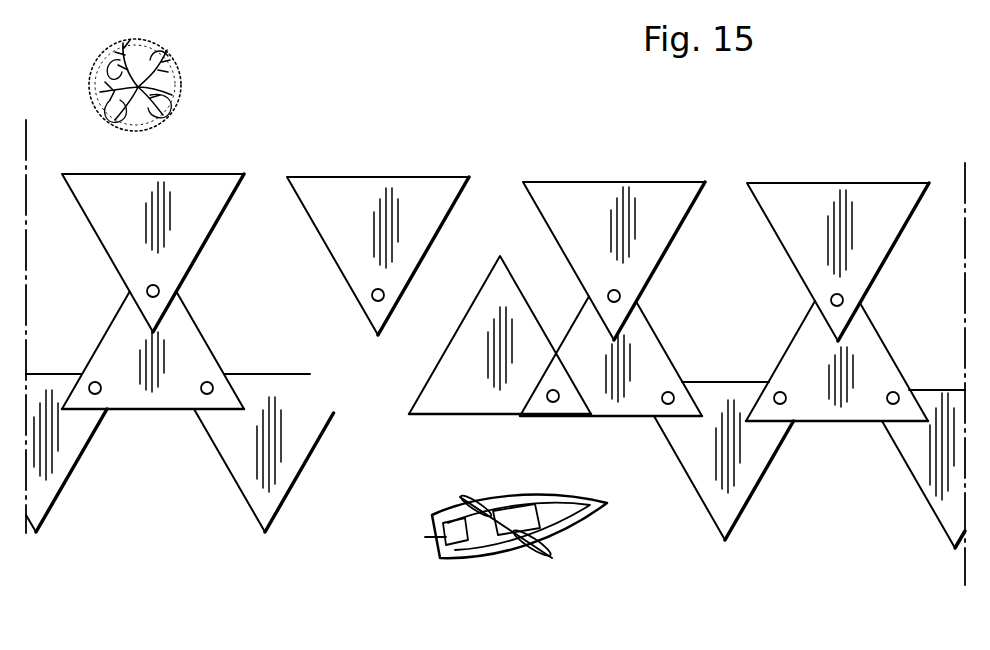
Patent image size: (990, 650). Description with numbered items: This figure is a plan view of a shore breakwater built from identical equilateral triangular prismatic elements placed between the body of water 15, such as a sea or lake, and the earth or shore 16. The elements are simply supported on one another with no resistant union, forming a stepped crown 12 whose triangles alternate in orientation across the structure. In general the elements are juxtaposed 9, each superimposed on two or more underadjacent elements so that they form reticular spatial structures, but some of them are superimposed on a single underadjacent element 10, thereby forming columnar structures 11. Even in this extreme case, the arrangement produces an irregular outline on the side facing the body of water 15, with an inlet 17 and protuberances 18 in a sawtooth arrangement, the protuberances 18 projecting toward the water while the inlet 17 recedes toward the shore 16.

The juxtaposed element 9 is at (657, 190).
The single underadjacent element 10 is at (492, 400).
The columnar structure 11 is at (70, 480).
The stepped crown 12 is at (195, 183).
The body of water 15 is at (375, 609).
The earth, shore 16 is at (520, 104).
The inlet 17 is at (840, 460).
The protuberance 18 is at (725, 543).